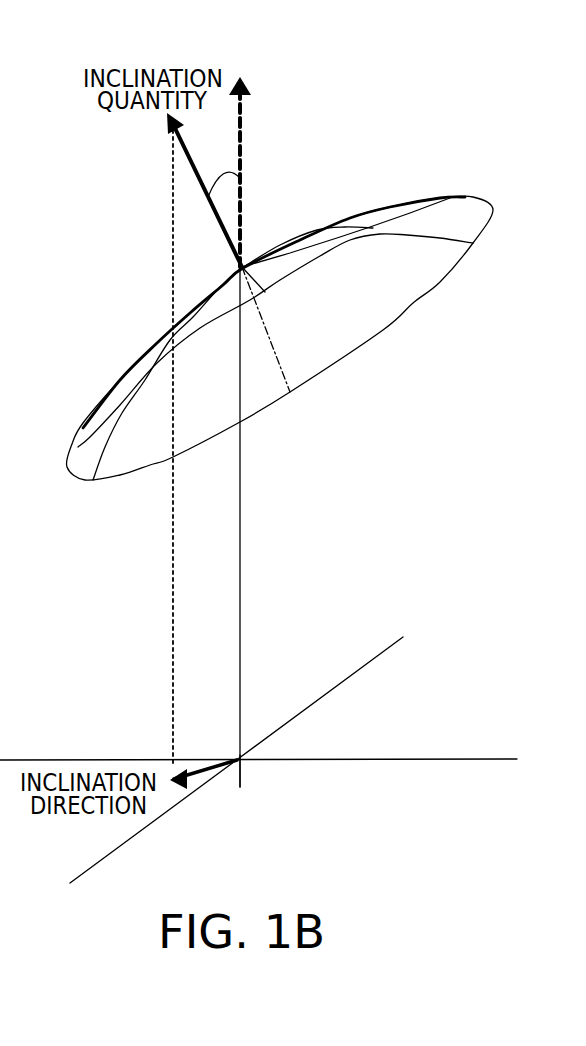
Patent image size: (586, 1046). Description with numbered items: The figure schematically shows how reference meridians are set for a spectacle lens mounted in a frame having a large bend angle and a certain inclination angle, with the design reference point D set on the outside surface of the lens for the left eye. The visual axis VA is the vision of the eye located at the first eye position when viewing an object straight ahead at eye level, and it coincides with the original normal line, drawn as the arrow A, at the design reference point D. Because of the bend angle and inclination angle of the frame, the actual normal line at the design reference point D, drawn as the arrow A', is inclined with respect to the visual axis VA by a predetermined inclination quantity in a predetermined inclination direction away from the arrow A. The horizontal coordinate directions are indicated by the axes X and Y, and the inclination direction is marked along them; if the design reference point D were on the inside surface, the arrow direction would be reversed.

The normal line arrow A is at (259, 168).
The inclined normal line arrow A' is at (180, 190).
The design reference point D is at (317, 167).
The visual axis VA is at (240, 788).
The X axis X is at (222, 767).
The Y axis Y is at (274, 761).